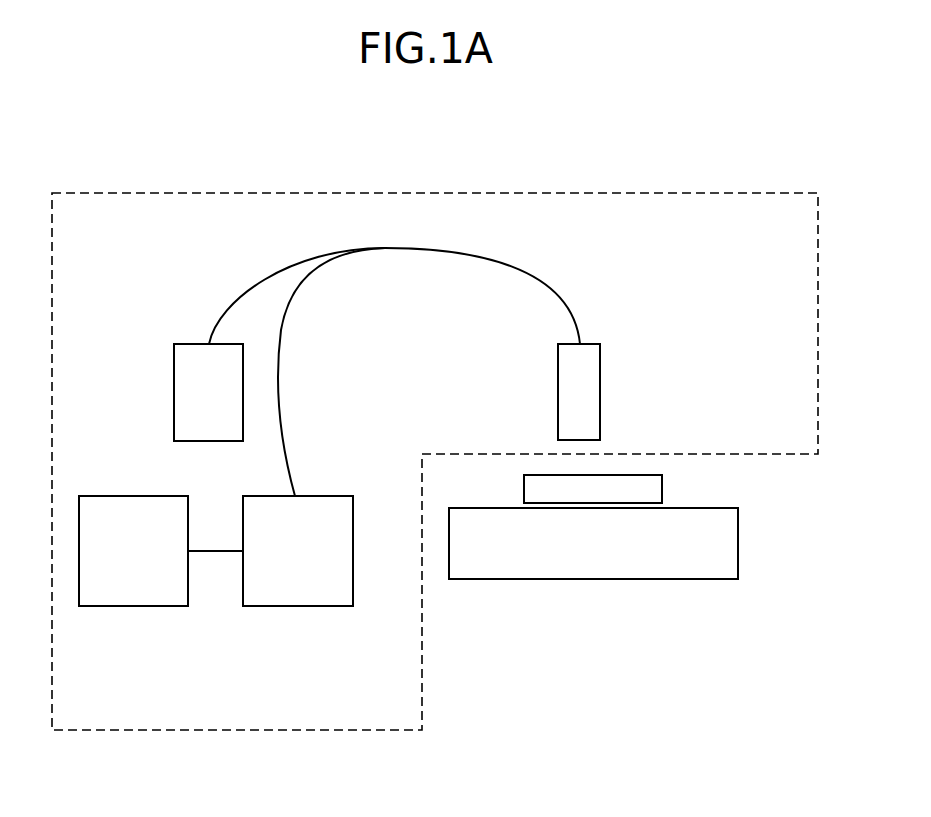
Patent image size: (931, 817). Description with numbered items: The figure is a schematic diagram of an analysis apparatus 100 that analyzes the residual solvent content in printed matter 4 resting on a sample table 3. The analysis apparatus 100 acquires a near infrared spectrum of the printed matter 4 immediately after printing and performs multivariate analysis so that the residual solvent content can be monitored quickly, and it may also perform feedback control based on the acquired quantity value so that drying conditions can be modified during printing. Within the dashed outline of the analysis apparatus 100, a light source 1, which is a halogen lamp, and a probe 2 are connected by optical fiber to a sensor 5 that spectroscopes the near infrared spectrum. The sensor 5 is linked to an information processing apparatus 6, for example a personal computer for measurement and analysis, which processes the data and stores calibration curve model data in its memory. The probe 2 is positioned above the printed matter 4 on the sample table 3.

The analysis apparatus 100 is at (710, 192).
The light source 1 is at (174, 343).
The probe 2 is at (590, 344).
The sample table 3 is at (738, 541).
The printed matter 4 is at (662, 487).
The sensor 5 is at (300, 606).
The information processing apparatus 6 is at (136, 606).